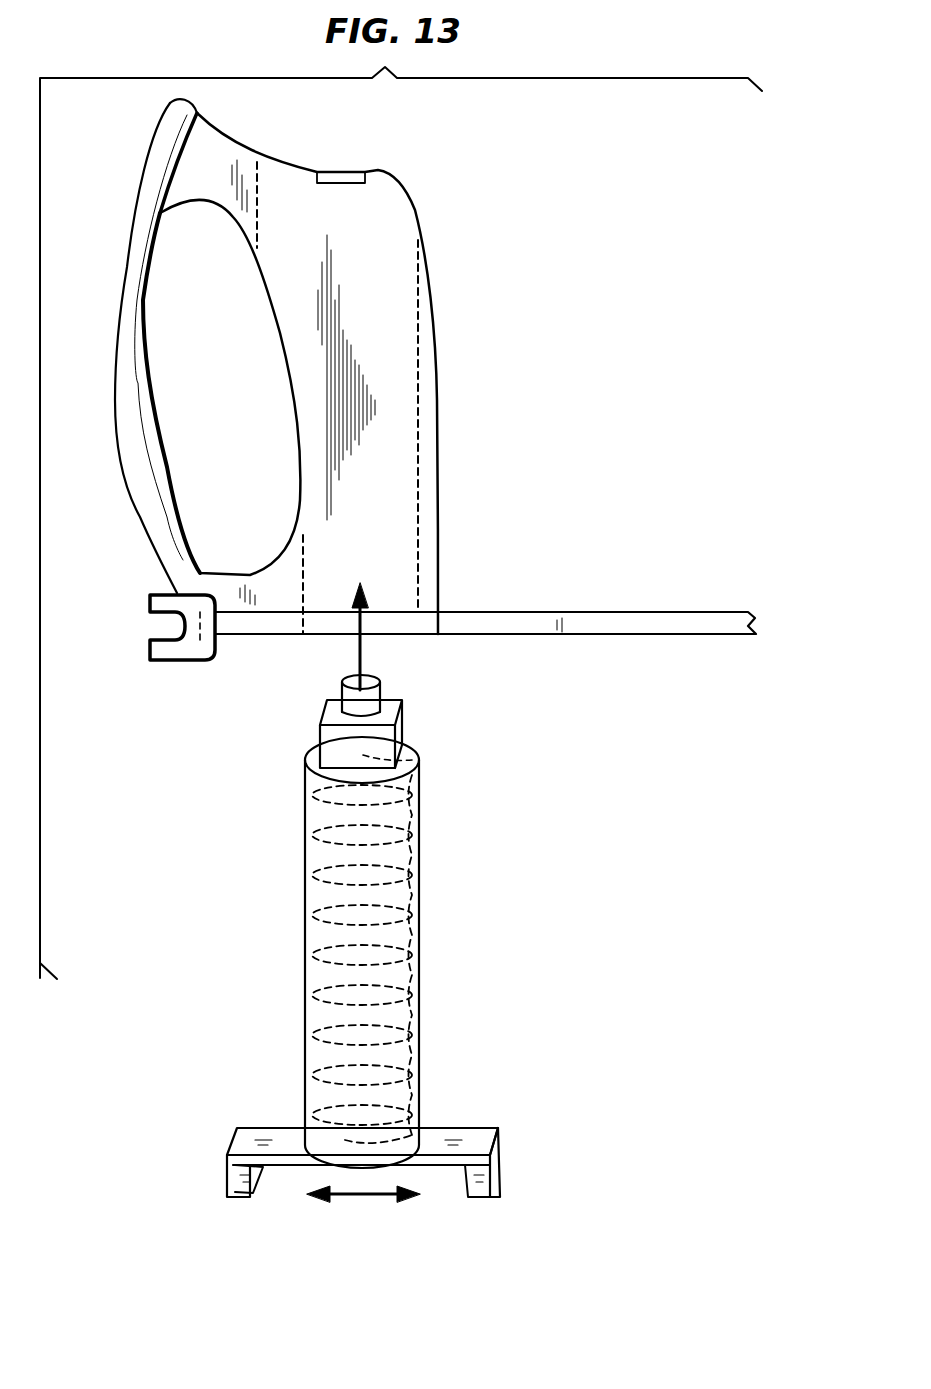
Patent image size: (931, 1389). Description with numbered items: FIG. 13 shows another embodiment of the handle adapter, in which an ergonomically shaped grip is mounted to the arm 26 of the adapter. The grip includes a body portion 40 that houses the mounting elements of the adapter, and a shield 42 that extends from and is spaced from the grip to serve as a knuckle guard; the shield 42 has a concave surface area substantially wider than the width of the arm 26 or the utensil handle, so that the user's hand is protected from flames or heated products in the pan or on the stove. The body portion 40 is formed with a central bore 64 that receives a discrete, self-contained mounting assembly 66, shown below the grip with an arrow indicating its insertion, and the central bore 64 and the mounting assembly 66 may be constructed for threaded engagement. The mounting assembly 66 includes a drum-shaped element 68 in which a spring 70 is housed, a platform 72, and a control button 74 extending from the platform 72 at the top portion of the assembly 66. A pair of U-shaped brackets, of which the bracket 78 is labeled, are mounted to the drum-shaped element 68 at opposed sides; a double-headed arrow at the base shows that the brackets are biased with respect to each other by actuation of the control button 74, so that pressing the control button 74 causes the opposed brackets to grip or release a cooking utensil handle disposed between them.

The arm 26 is at (597, 611).
The body portion 40 is at (425, 322).
The shield 42 is at (148, 207).
The central bore 64 is at (373, 240).
The mounting assembly 66 is at (428, 772).
The drum-shaped element 68 is at (420, 830).
The spring 70 is at (305, 945).
The platform 72 is at (318, 745).
The control button 74 is at (383, 692).
The U-shaped bracket 78 is at (228, 1163).